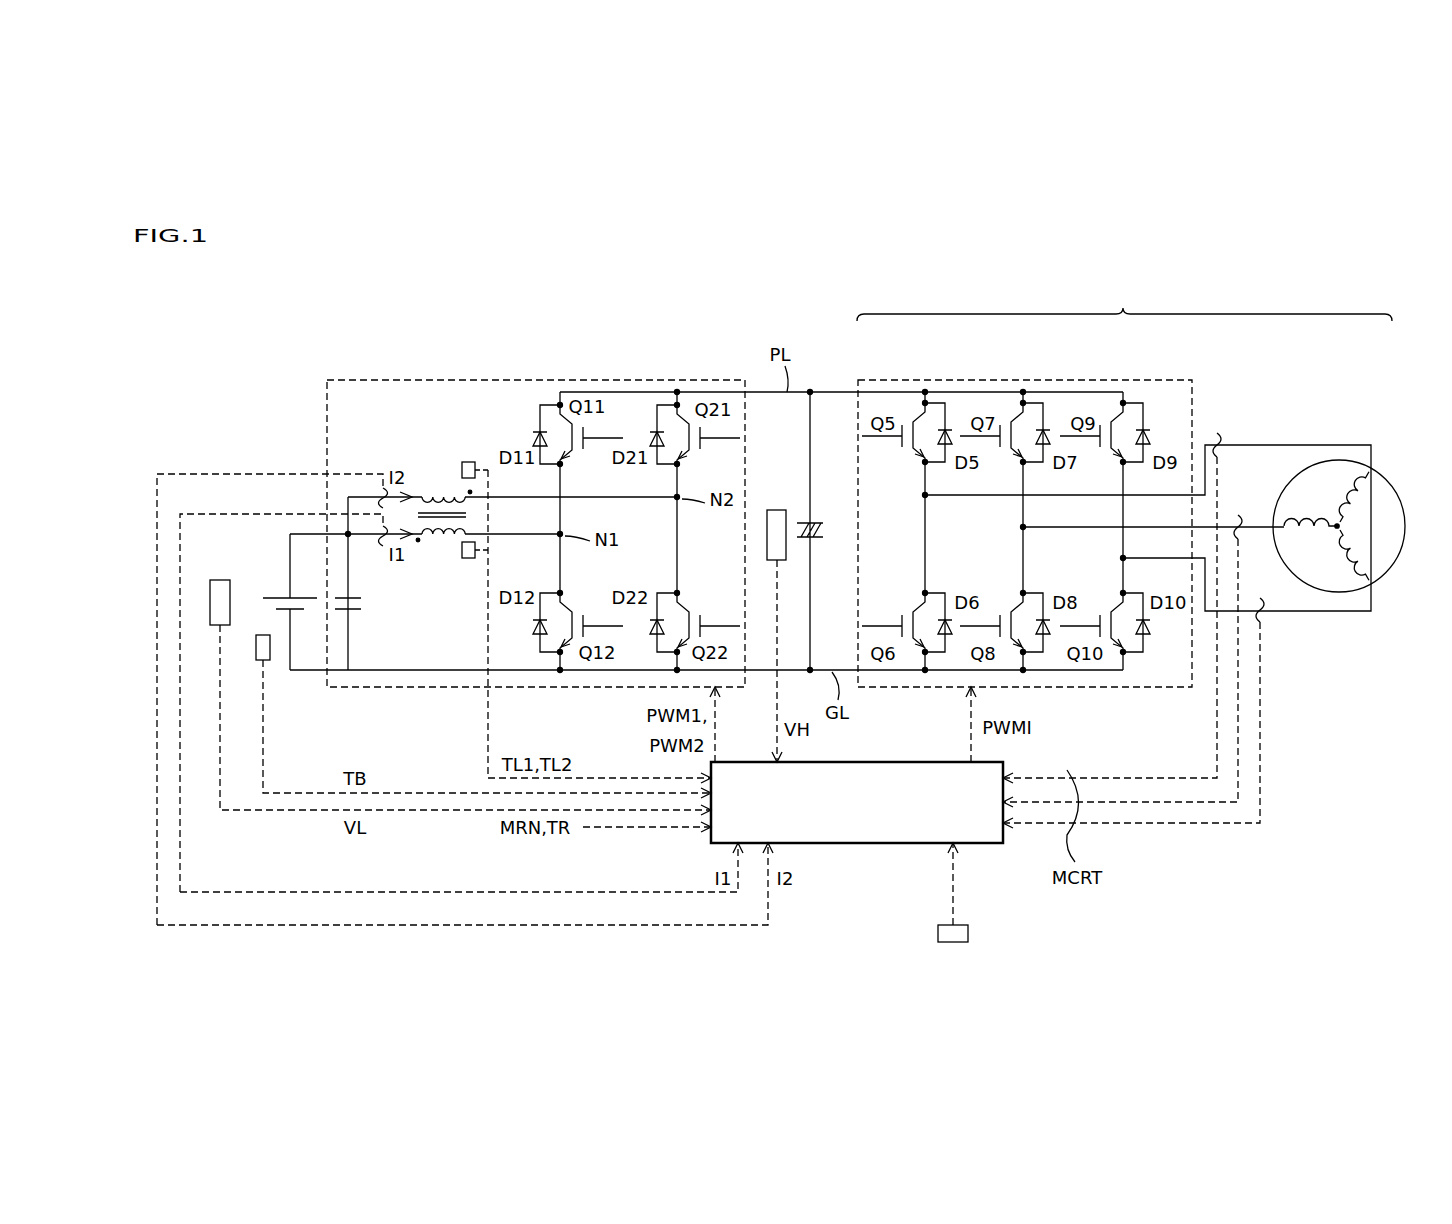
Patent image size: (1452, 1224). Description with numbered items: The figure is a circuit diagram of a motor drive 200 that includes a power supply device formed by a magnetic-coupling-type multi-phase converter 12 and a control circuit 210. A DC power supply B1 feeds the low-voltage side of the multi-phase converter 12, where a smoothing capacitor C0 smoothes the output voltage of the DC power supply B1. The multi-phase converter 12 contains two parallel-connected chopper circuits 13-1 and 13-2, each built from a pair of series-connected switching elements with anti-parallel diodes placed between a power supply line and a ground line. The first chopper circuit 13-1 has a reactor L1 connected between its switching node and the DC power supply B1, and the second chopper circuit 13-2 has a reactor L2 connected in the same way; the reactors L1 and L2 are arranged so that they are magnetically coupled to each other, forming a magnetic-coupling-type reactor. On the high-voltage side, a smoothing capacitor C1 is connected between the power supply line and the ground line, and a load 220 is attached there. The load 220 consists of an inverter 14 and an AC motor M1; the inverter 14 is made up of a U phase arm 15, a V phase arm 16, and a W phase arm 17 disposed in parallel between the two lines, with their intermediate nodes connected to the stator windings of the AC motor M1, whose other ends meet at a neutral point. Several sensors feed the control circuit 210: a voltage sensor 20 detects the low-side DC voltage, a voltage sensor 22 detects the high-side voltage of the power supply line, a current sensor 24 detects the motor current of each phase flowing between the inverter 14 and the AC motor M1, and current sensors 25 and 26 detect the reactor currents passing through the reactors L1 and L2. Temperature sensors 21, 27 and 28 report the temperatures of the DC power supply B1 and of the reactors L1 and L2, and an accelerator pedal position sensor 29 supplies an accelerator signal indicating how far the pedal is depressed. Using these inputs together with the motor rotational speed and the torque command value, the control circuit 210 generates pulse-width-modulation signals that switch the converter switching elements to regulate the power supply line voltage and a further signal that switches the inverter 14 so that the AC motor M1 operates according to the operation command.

The magnetic-coupling-type multi-phase converter 12 is at (697, 380).
The inverter 14 is at (1150, 380).
The U phase arm 15 is at (891, 504).
The V phase arm 16 is at (991, 532).
The W phase arm 17 is at (1091, 565).
The voltage sensor 20 is at (216, 580).
The temperature sensor 21 is at (260, 635).
The voltage sensor 22 is at (777, 510).
The current sensor 24 is at (1221, 433).
The current sensor 25 is at (383, 546).
The current sensor 26 is at (383, 488).
The temperature sensor 27 is at (468, 558).
The temperature sensor 28 is at (466, 462).
The accelerator pedal position sensor 29 is at (968, 942).
The motor drive 200 is at (1281, 276).
The control circuit 210 is at (905, 845).
The load 220 is at (1124, 303).
The chopper circuit 13-1 is at (452, 612).
The chopper circuit 13-2 is at (320, 467).
The DC power supply B1 is at (277, 598).
The smoothing capacitor C0 is at (355, 611).
The smoothing capacitor C1 is at (818, 520).
The reactor L1 is at (432, 542).
The reactor L2 is at (432, 490).
The AC motor M1 is at (1389, 483).